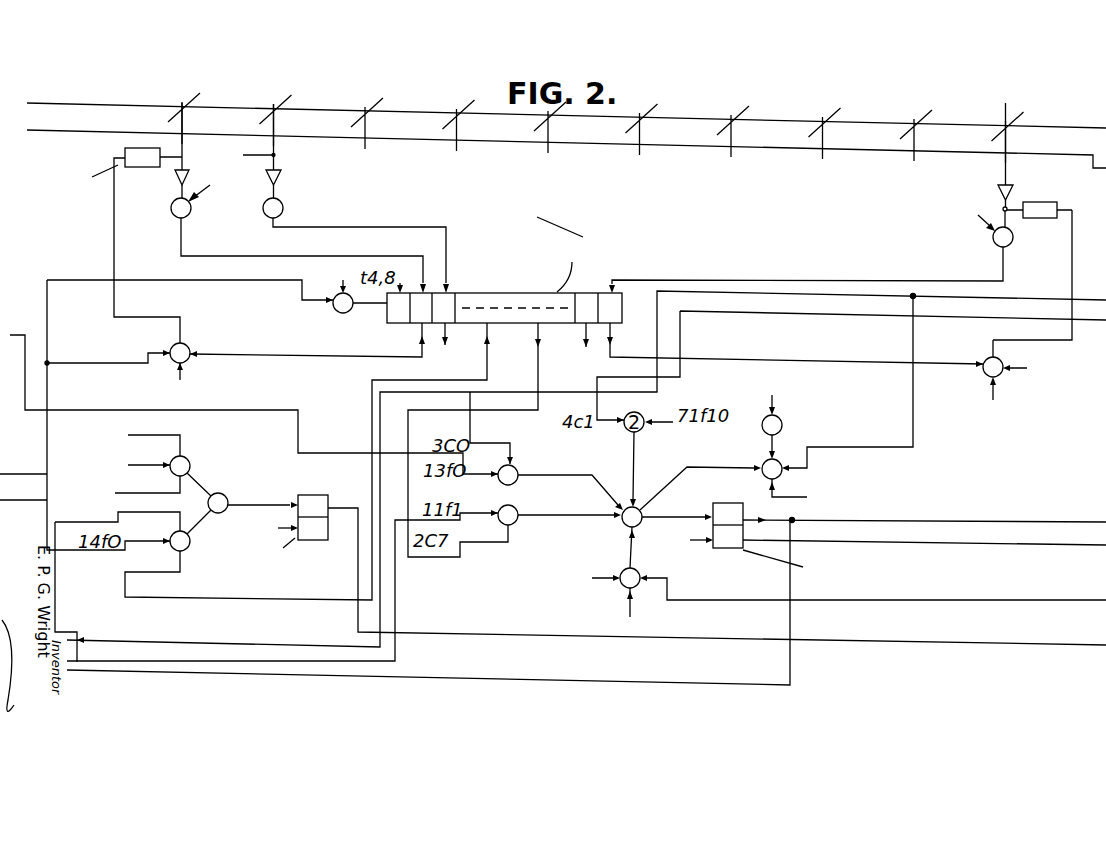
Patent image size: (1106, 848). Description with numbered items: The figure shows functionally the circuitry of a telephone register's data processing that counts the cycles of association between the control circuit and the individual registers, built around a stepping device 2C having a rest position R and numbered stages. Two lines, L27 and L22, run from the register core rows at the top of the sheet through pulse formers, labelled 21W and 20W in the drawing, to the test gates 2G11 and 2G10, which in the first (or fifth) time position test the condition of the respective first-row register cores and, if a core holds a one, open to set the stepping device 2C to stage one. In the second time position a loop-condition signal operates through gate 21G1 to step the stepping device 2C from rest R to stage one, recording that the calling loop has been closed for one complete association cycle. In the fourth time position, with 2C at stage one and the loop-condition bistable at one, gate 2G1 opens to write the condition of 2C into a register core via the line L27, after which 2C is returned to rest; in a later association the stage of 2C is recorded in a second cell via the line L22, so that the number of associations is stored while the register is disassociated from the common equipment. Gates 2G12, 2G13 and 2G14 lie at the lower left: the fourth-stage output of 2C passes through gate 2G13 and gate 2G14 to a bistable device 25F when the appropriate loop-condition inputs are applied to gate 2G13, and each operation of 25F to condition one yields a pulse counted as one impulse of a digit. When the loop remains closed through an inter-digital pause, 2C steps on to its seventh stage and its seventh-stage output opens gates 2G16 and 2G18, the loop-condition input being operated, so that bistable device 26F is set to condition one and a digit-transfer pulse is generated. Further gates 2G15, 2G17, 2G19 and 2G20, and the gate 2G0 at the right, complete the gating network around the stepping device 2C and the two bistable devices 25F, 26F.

The pulse former 21W is at (93, 239).
The line L27 is at (197, 150).
The line L22 is at (346, 198).
The gate 2G11 is at (298, 236).
The gate 21G1 is at (217, 303).
The gate 2G1 is at (142, 367).
The stepping device 2C is at (504, 270).
The gate 2G12 is at (160, 461).
The gate 2G13 is at (272, 461).
The gate 2G14 is at (242, 503).
The bistable device 25F is at (671, 556).
The gate 2G15 is at (560, 480).
The gate 2G16 is at (559, 508).
The gate 2G18 is at (691, 496).
The bistable device 26F is at (879, 534).
The gate 2G17 is at (811, 581).
The gate 2G20 is at (798, 416).
The gate 2G19 is at (816, 402).
The gate 2G0 is at (1003, 317).
The pulse former 20W is at (1035, 179).
The gate 2G10 is at (811, 243).